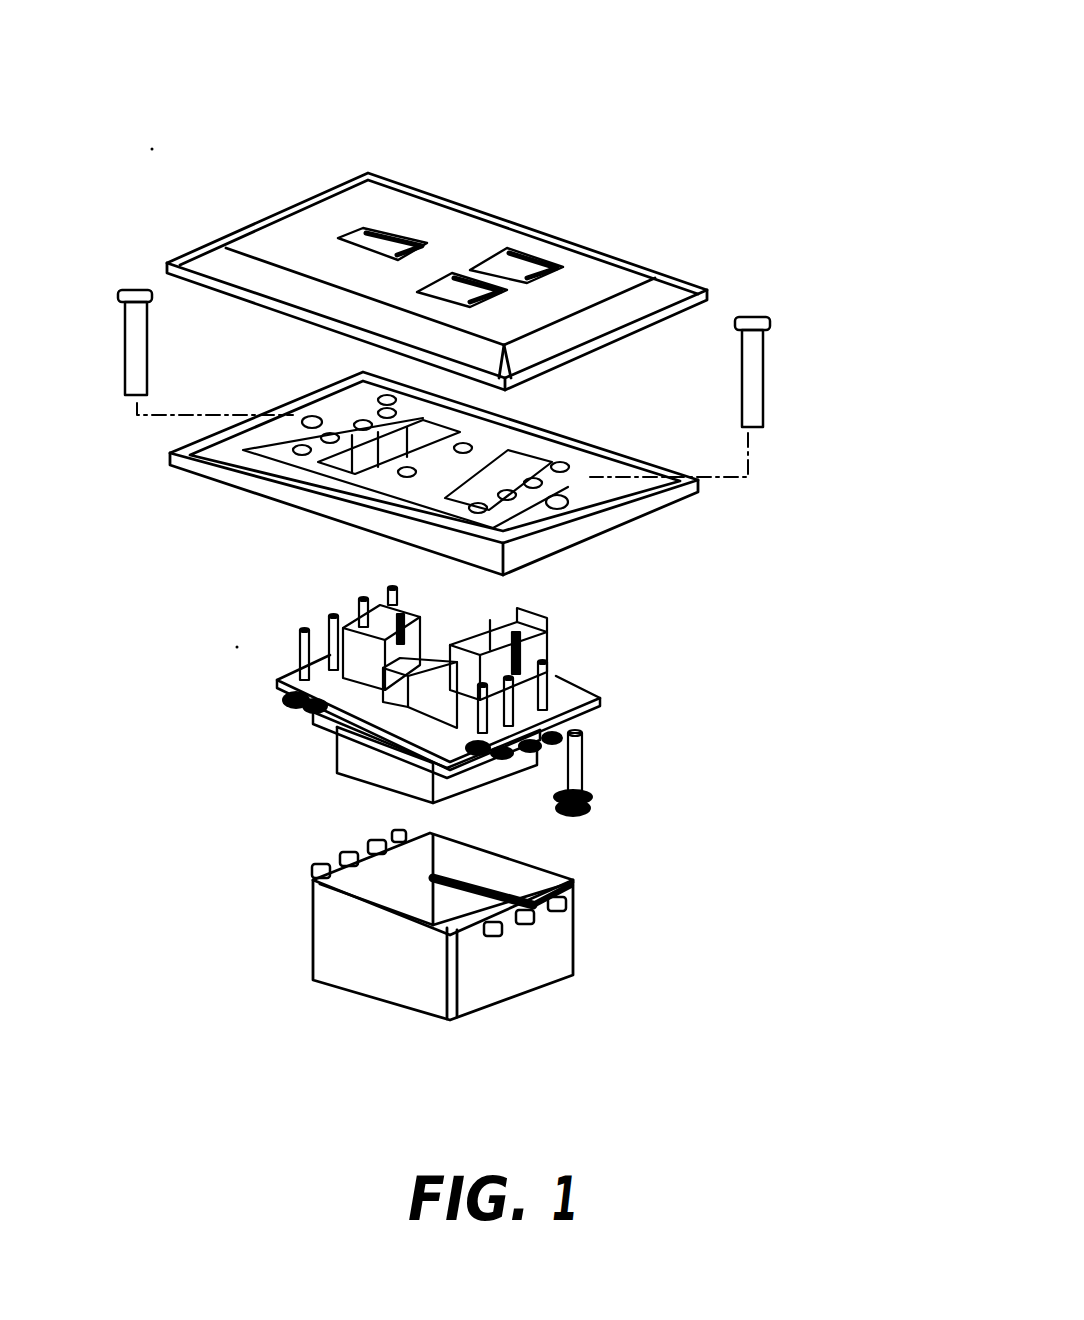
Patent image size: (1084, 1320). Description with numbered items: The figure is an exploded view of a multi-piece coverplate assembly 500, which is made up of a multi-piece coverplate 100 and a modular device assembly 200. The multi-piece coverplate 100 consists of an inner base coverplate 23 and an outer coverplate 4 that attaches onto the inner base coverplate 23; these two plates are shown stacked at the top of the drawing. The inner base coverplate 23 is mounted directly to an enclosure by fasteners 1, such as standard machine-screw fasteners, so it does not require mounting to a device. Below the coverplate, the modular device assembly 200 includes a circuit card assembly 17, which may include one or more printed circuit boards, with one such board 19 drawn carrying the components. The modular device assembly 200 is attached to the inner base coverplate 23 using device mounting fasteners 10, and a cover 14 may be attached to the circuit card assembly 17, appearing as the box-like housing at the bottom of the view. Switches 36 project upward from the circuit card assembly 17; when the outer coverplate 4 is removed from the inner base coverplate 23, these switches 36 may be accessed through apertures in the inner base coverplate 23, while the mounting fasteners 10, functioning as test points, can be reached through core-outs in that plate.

The multi-piece coverplate assembly 500 is at (678, 105).
The multi-piece coverplate 100 is at (763, 277).
The modular device assembly 200 is at (765, 623).
The outer coverplate 4 is at (655, 276).
The inner base coverplate 23 is at (642, 462).
The fasteners 1 is at (120, 292).
The circuit card assembly 17 is at (588, 665).
The circuit board 19 is at (594, 702).
The switches 36 is at (393, 658).
The device mounting fasteners 10 is at (594, 792).
The cover 14 is at (578, 943).